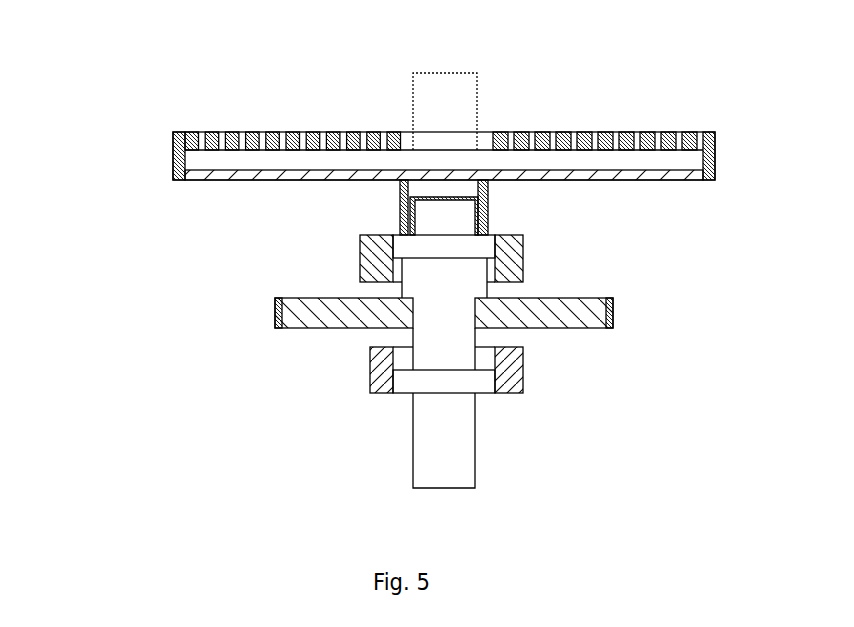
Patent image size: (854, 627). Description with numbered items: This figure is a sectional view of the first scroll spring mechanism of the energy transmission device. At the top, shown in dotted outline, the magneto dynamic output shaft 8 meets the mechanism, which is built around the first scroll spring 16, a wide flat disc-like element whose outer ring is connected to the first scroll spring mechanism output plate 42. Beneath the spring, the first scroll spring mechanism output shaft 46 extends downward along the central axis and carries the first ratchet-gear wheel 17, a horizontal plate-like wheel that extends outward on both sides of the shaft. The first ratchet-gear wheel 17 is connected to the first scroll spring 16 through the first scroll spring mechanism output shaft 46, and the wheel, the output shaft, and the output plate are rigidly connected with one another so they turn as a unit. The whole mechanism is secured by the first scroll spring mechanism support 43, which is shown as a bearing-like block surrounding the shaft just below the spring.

The magneto dynamic output shaft 8 is at (433, 101).
The first scroll spring 16 is at (208, 132).
The first scroll spring mechanism output plate 42 is at (173, 170).
The first scroll spring mechanism support 43 is at (372, 250).
The first ratchet-gear wheel 17 is at (310, 320).
The first scroll spring mechanism output shaft 46 is at (450, 426).